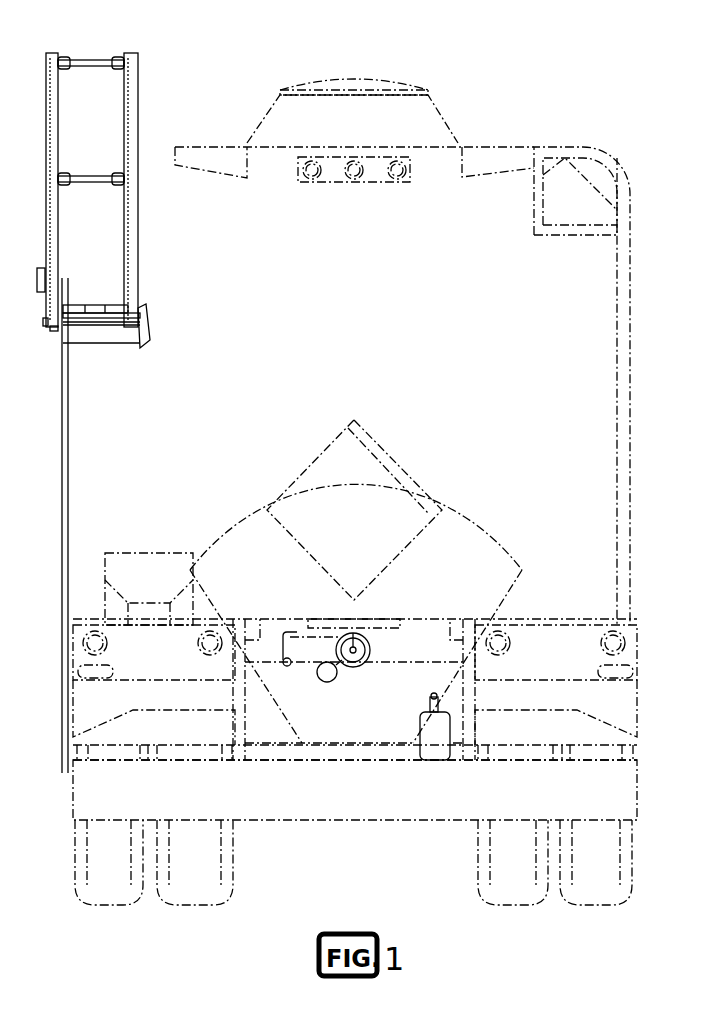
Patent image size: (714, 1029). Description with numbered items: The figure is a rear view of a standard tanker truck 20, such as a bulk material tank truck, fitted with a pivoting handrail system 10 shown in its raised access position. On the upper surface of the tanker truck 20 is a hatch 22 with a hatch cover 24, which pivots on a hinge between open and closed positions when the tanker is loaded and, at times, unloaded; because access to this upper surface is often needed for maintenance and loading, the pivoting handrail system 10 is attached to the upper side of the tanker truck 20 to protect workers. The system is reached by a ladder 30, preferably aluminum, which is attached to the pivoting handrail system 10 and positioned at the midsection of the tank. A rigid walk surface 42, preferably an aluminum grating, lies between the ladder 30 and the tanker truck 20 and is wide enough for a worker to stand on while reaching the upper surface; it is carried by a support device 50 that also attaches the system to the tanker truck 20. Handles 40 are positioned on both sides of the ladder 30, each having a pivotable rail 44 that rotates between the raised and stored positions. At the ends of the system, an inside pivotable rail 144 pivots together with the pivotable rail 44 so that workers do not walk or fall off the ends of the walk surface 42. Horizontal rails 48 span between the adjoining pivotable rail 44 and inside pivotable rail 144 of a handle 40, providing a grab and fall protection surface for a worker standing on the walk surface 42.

The pivoting handrail system 10 is at (130, 394).
The tanker truck 20 is at (512, 318).
The hatch 22 is at (418, 118).
The hatch cover 24 is at (372, 83).
The ladder 30 is at (62, 519).
The handle 40 is at (40, 286).
The walk surface 42 is at (100, 305).
The pivotable rail 44 is at (46, 238).
The horizontal rail 48 is at (88, 57).
The support device 50 is at (52, 334).
The inside pivotable rail 144 is at (138, 226).